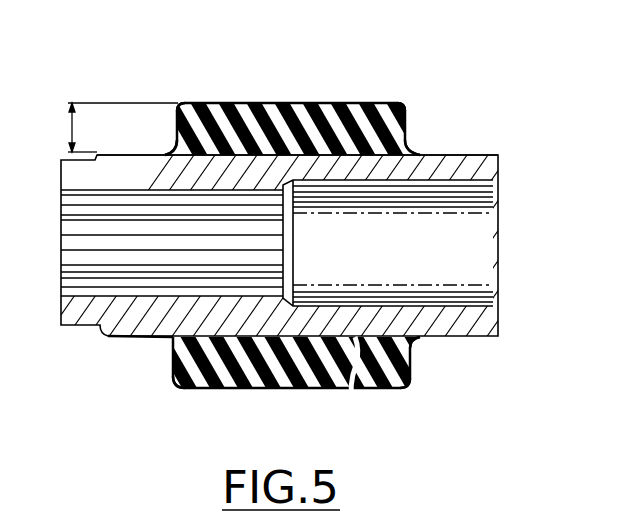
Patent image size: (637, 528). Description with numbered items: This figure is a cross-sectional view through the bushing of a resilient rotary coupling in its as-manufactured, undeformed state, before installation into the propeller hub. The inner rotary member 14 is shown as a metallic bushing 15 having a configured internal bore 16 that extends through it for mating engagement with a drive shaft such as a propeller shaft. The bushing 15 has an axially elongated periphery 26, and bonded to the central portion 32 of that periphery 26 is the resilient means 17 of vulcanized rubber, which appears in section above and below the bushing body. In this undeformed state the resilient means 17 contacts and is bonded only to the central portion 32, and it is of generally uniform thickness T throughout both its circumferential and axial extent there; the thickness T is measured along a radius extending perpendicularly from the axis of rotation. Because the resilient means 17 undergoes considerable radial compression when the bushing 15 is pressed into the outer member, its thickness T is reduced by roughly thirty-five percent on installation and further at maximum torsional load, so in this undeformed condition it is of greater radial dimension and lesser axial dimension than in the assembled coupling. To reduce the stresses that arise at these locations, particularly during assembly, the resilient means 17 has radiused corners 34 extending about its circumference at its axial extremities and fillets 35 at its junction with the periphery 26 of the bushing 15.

The inner rotary member 14 is at (498, 163).
The bushing 15 is at (432, 153).
The bore 16 is at (486, 222).
The resilient means 17 is at (177, 94).
The periphery 26 is at (355, 337).
The central portion 32 is at (314, 215).
The radiused corners 34 is at (175, 108).
The fillets 35 is at (172, 343).
The thickness T is at (71, 125).